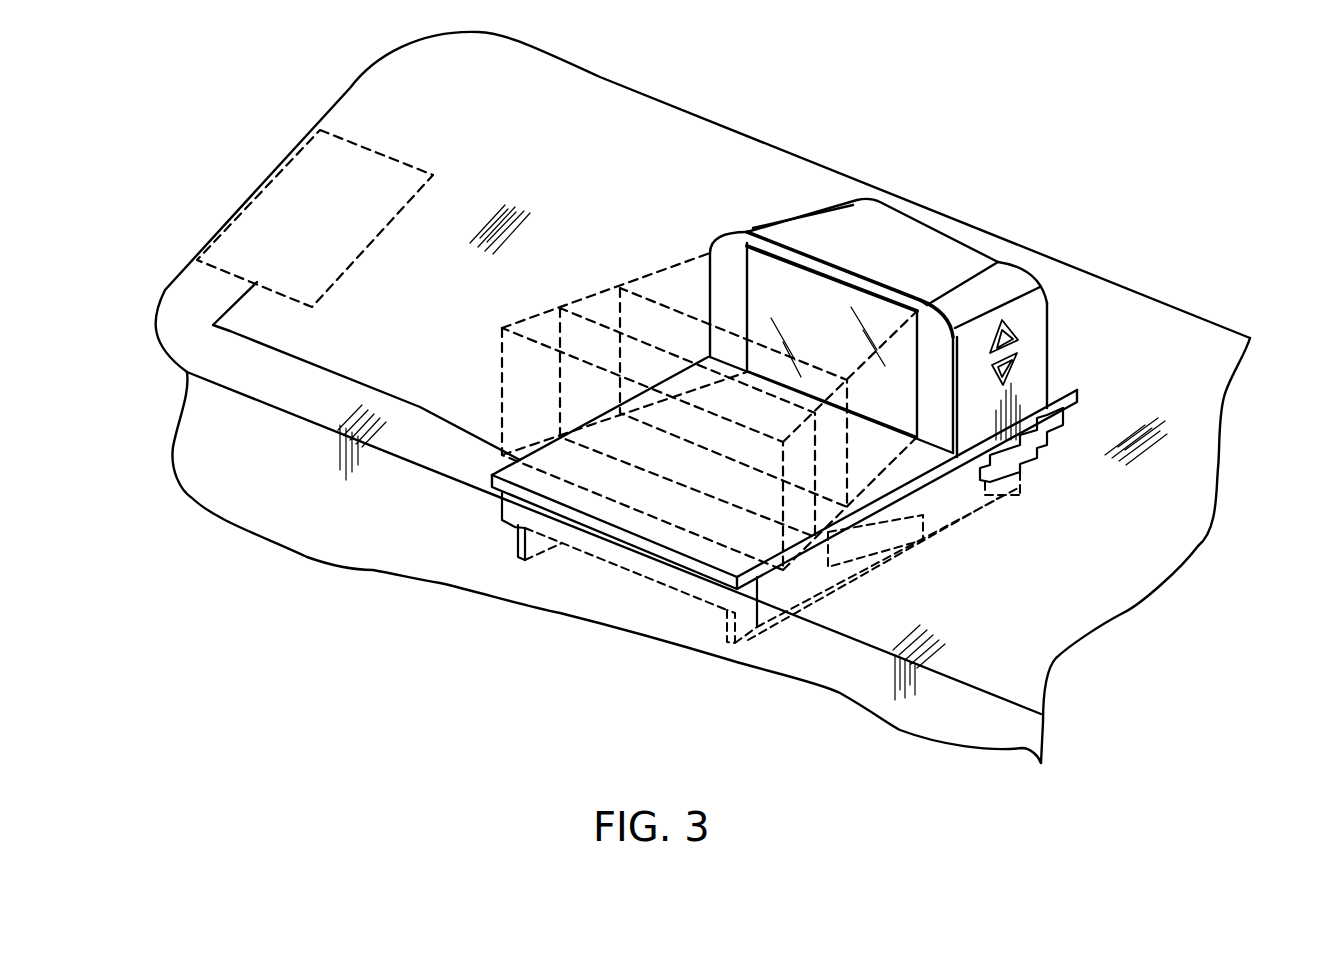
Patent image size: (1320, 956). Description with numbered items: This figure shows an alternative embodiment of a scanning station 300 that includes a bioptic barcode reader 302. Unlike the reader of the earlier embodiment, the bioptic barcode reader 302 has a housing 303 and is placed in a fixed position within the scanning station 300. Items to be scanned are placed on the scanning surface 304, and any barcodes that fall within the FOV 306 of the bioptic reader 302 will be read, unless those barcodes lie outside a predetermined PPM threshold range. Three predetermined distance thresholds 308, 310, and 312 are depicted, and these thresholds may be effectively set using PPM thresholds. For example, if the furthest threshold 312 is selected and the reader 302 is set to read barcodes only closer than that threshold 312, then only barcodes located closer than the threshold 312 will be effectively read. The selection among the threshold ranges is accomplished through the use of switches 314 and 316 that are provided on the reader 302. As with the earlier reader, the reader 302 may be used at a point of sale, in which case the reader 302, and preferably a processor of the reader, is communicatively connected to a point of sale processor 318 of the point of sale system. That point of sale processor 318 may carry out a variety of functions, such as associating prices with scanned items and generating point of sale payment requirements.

The scanning station 300 is at (935, 283).
The bioptic barcode reader 302 is at (1057, 335).
The housing 303 is at (913, 240).
The scanning surface 304 is at (898, 467).
The FOV 306 is at (669, 379).
The predetermined distance threshold 308 is at (620, 288).
The predetermined distance threshold 310 is at (560, 308).
The predetermined distance threshold 312 is at (502, 385).
The switch 314 is at (1010, 337).
The switch 316 is at (1010, 357).
The point of sale processor 318 is at (262, 192).